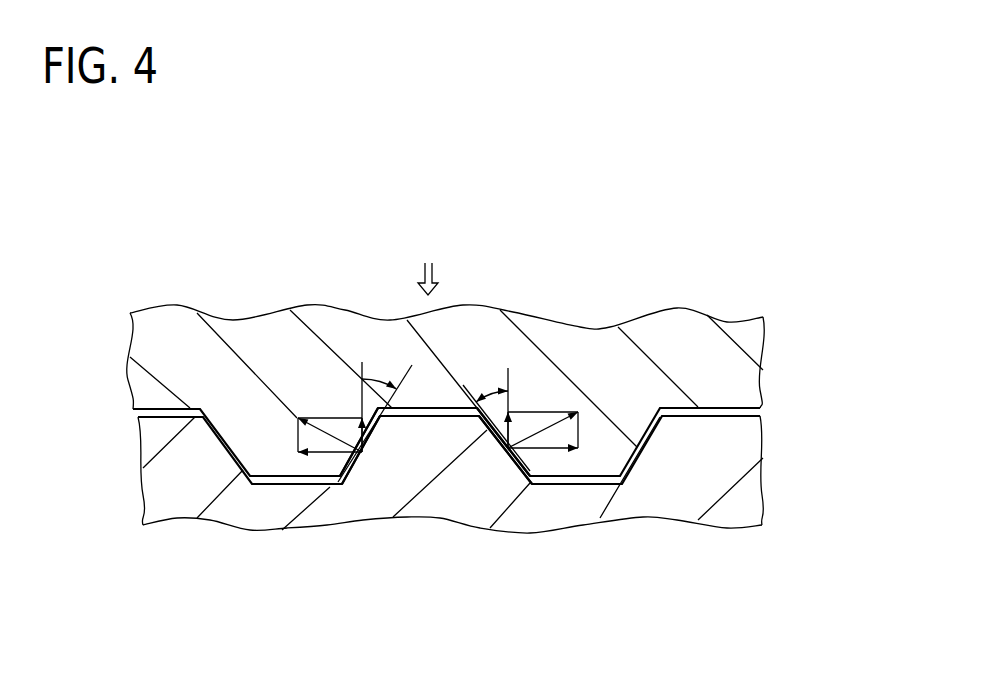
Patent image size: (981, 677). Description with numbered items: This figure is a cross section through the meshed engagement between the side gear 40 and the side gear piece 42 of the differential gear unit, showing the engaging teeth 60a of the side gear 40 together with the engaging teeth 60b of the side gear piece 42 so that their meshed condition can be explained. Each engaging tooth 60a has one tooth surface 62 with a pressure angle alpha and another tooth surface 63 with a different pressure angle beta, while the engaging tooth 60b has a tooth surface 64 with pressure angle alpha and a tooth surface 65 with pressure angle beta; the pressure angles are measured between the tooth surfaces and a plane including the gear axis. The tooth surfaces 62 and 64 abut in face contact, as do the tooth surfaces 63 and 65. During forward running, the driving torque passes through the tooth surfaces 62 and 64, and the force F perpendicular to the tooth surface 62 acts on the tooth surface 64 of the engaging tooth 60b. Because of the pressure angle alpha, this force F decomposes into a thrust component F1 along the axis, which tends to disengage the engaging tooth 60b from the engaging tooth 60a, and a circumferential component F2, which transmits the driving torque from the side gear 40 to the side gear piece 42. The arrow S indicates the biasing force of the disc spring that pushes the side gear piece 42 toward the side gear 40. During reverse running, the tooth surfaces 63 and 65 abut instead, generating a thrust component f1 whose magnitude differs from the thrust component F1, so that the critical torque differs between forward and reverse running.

The side gear 40 is at (168, 500).
The side gear piece 42 is at (160, 323).
The engaging teeth of the side gear 60a is at (432, 440).
The engaging teeth of the side gear piece 60b is at (265, 453).
The tooth surface 62 is at (542, 483).
The other tooth surface 63 is at (330, 486).
The tooth surface 64 is at (512, 460).
The tooth surface 65 is at (358, 446).
The thrust component f1 is at (358, 442).
The force F is at (550, 428).
The thrust component F1 is at (525, 433).
The circumferential component F2 is at (578, 448).
The biasing force S is at (428, 267).